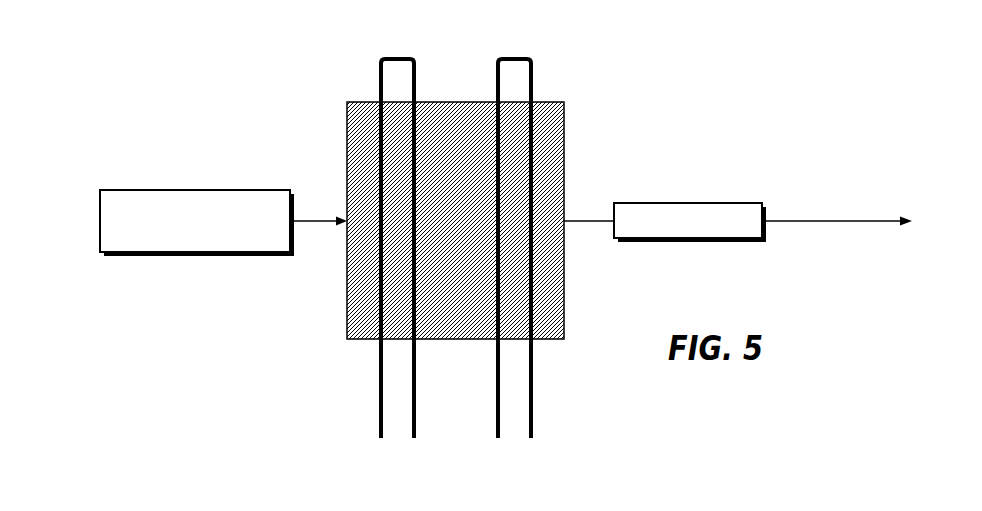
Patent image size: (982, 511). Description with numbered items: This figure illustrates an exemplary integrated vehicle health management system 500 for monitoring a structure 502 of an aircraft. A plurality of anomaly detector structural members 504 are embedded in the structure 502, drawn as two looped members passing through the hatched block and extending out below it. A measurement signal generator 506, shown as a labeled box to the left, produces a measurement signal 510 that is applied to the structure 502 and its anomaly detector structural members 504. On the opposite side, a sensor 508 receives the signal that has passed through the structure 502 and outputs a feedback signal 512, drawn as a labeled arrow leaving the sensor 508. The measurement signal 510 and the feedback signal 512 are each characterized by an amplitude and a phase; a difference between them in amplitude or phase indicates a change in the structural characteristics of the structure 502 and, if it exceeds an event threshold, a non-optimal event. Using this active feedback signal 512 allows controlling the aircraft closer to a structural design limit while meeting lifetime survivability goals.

The IVHM system 500 is at (757, 83).
The structure 502 is at (564, 155).
The anomaly detector structural members 504 is at (379, 78).
The measurement signal generator 506 is at (120, 190).
The sensor 508 is at (743, 203).
The measurement signal 510 is at (325, 220).
The feedback signal 512 is at (892, 218).